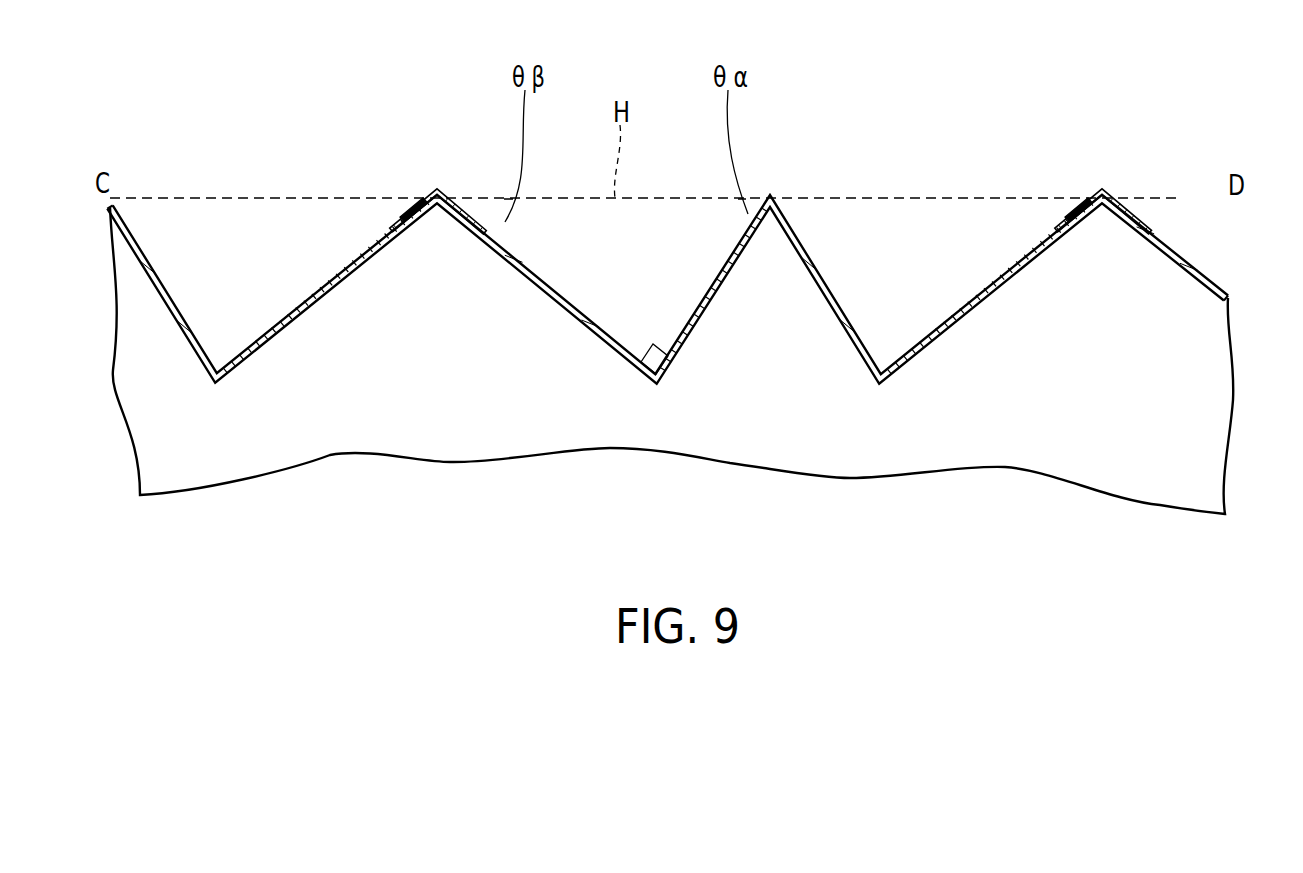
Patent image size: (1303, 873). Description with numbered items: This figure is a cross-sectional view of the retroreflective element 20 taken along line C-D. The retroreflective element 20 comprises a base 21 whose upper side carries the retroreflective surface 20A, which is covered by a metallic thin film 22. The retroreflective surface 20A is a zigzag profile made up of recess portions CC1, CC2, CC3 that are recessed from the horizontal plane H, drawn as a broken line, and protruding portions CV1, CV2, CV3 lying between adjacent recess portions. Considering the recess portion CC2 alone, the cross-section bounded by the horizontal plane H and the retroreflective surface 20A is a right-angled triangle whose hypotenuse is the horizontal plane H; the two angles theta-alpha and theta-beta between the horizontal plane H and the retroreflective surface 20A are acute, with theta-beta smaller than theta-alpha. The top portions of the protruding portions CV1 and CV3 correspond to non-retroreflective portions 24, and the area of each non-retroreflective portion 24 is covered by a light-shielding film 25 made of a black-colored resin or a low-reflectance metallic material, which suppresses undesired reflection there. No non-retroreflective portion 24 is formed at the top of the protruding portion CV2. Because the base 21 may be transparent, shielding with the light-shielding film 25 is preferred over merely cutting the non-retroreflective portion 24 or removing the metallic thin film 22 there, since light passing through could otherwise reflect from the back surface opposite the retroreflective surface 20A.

The retroreflective element 20 is at (937, 142).
The retroreflective surface 20A is at (554, 282).
The base 21 is at (1210, 458).
The metallic thin film 22 is at (1188, 275).
The non-retroreflective portion 24 is at (412, 203).
The light-shielding film 25 is at (452, 203).
The protruding portion CV1 is at (438, 193).
The protruding portion CV2 is at (771, 197).
The protruding portion CV3 is at (1103, 193).
The recess portion CC1 is at (241, 293).
The recess portion CC2 is at (645, 292).
The recess portion CC3 is at (881, 292).